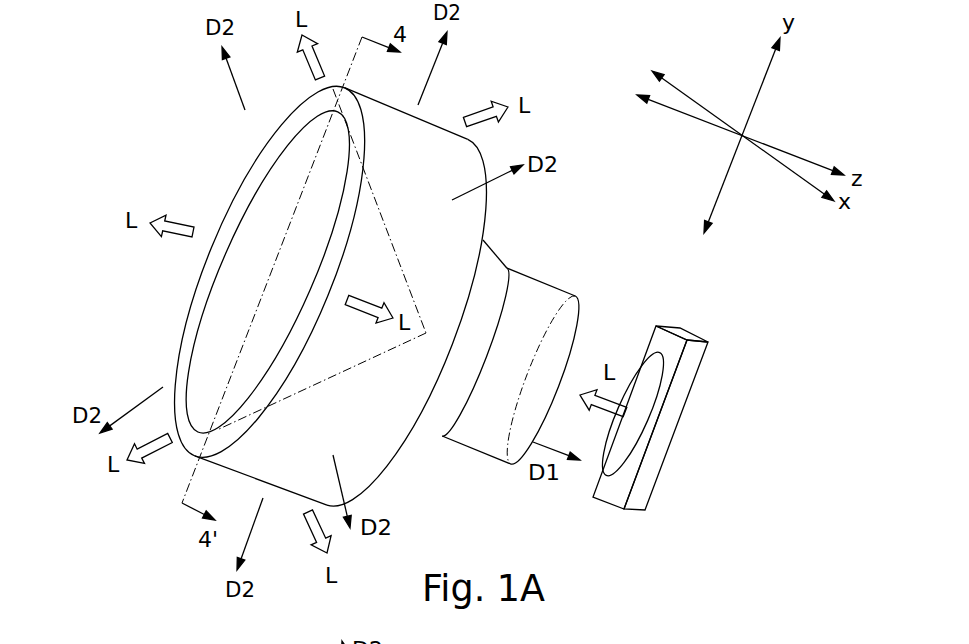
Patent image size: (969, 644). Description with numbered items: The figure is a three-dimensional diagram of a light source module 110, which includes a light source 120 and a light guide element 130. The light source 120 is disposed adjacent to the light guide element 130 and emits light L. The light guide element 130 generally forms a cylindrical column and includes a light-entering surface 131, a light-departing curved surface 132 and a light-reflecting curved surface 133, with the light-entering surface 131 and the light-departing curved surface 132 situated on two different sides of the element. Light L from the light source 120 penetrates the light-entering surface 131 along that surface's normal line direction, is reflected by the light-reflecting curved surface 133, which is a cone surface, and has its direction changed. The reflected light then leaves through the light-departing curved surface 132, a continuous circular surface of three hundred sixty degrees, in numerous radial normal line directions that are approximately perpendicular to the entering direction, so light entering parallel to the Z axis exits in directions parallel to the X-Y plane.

The light source module 110 is at (612, 36).
The light source 120 is at (680, 396).
The light guide element 130 is at (498, 252).
The light-entering surface 131 is at (572, 317).
The light-departing curved surface 132 is at (397, 408).
The light-reflecting curved surface 133 is at (210, 383).